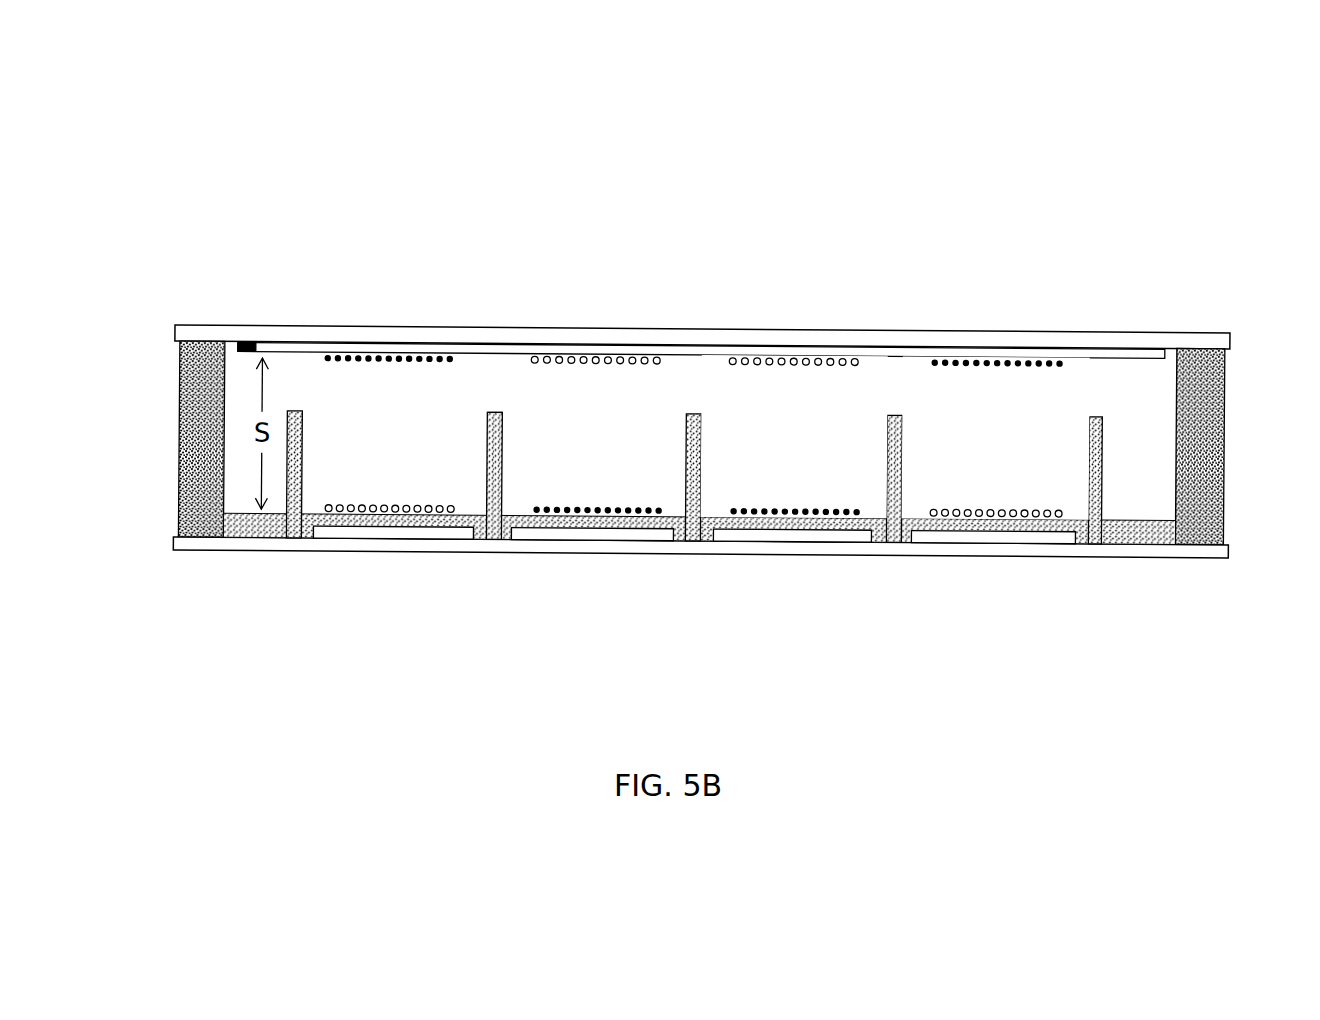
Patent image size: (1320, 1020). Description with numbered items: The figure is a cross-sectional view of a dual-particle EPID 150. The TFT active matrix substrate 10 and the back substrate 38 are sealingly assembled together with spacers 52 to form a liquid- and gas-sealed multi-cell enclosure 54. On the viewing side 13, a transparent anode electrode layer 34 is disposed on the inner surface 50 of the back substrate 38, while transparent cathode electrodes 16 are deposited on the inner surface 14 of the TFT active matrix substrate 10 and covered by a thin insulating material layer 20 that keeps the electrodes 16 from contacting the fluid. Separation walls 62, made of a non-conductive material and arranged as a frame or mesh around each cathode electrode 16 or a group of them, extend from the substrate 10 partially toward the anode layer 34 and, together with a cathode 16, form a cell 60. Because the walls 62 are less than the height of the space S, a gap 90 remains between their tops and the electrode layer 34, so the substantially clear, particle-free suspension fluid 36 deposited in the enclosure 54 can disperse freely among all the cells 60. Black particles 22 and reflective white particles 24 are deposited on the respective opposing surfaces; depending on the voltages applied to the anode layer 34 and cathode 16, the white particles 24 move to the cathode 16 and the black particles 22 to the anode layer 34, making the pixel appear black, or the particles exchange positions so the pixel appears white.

The EPID 150 is at (552, 222).
The viewing side 13 is at (818, 275).
The back substrate 38 is at (271, 322).
The inner surface 50 is at (1133, 353).
The anode electrode layer 34 is at (254, 346).
The spacers 52 is at (178, 390).
The TFT active matrix substrate 10 is at (200, 544).
The insulating material layer 20 is at (1128, 522).
The inner surface 14 is at (1157, 534).
The cathode electrode 16 is at (335, 530).
The separation walls 62 is at (488, 471).
The gap 90 is at (492, 394).
The enclosure 54 is at (840, 404).
The cell 60 is at (959, 486).
The suspension fluid 36 is at (630, 428).
The black particles 22 is at (408, 372).
The reflective white particles 24 is at (396, 498).